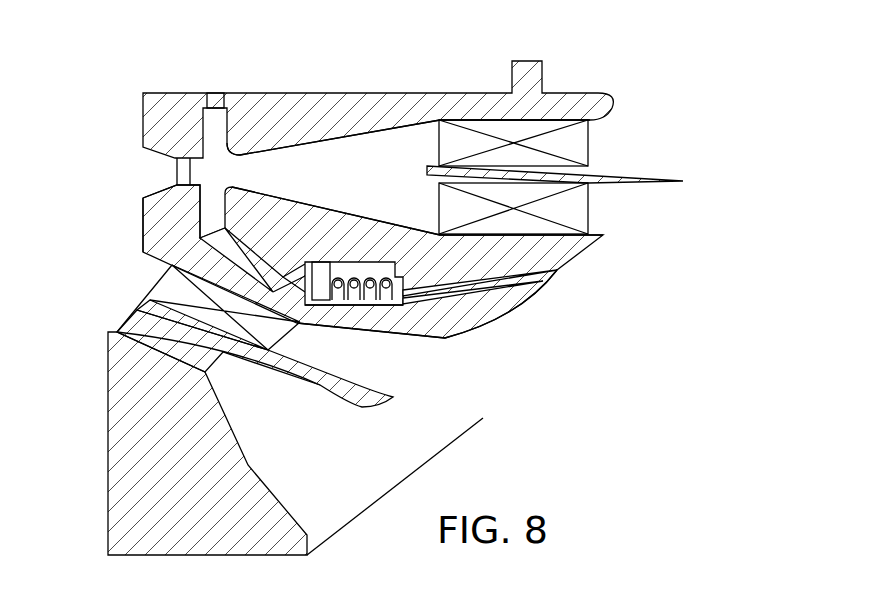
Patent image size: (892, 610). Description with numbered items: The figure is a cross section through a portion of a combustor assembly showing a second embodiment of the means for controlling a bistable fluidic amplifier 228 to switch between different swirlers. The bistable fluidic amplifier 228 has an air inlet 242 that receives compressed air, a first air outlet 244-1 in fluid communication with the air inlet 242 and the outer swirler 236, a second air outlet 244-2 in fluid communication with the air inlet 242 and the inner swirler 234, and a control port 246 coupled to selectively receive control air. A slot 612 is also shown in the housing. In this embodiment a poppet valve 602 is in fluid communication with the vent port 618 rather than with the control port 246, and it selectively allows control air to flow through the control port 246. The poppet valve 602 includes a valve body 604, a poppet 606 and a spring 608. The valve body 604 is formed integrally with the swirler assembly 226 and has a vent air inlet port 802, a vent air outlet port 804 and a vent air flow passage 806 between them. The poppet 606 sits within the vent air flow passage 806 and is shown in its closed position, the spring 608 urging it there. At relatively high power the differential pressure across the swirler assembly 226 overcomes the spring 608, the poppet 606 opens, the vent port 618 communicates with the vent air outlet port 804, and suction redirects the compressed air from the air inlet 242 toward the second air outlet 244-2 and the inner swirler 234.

The swirler assembly 226 is at (578, 84).
The bistable fluidic amplifier 228 is at (379, 134).
The slot 612 is at (217, 101).
The control port 246 is at (217, 156).
The air inlet 242 is at (172, 174).
The vent port 618 is at (210, 206).
The first air outlet 244-1 is at (439, 140).
The second air outlet 244-2 is at (439, 202).
The outer swirler 236 is at (588, 138).
The inner swirler 234 is at (588, 202).
The vent air inlet port 802 is at (300, 275).
The vent air flow passage 806 is at (351, 296).
The poppet 606 is at (320, 302).
The valve body 604 is at (377, 325).
The vent air outlet port 804 is at (543, 281).
The spring 608 is at (455, 330).
The poppet valve 602 is at (402, 319).